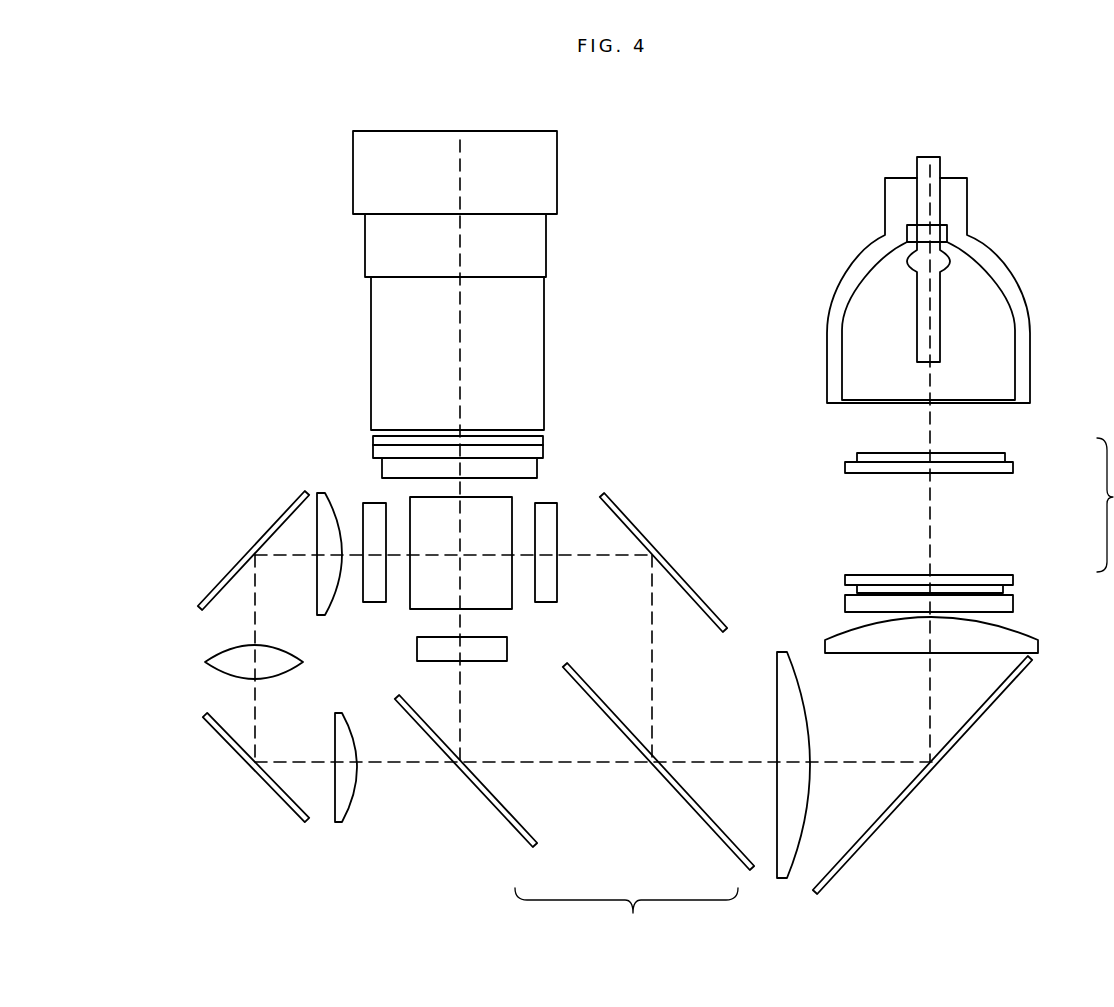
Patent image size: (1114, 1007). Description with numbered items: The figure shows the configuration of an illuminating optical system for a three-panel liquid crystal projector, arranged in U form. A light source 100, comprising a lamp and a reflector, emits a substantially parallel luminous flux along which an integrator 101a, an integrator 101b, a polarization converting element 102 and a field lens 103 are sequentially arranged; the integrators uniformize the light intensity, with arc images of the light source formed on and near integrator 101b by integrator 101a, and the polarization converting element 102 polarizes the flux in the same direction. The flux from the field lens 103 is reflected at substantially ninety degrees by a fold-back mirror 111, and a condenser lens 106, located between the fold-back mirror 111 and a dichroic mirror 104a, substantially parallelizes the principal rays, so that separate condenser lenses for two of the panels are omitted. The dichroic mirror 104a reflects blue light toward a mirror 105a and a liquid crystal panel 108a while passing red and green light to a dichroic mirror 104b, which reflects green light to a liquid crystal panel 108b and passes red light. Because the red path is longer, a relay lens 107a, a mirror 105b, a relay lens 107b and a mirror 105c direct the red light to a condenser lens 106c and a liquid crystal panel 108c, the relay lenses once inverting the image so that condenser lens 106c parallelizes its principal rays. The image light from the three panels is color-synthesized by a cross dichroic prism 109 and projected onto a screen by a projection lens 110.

The light source 100 is at (1000, 263).
The integrator 101a is at (1015, 463).
The integrator 101b is at (1015, 579).
The polarization converting element 102 is at (1013, 602).
The field lens 103 is at (1038, 642).
The dichroic mirror 104a is at (707, 826).
The dichroic mirror 104b is at (526, 846).
The mirror 105a is at (643, 530).
The mirror 105b is at (275, 795).
The mirror 105c is at (252, 548).
The condenser lens 106 is at (785, 878).
The condenser lens 106c is at (319, 494).
The relay lens 107a is at (345, 822).
The relay lens 107b is at (205, 662).
The liquid crystal panel 108a is at (551, 502).
The liquid crystal panel 108b is at (495, 661).
The liquid crystal panel 108c is at (371, 503).
The cross dichroic prism 109 is at (500, 609).
The projection lens 110 is at (545, 313).
The fold-back mirror 111 is at (940, 766).